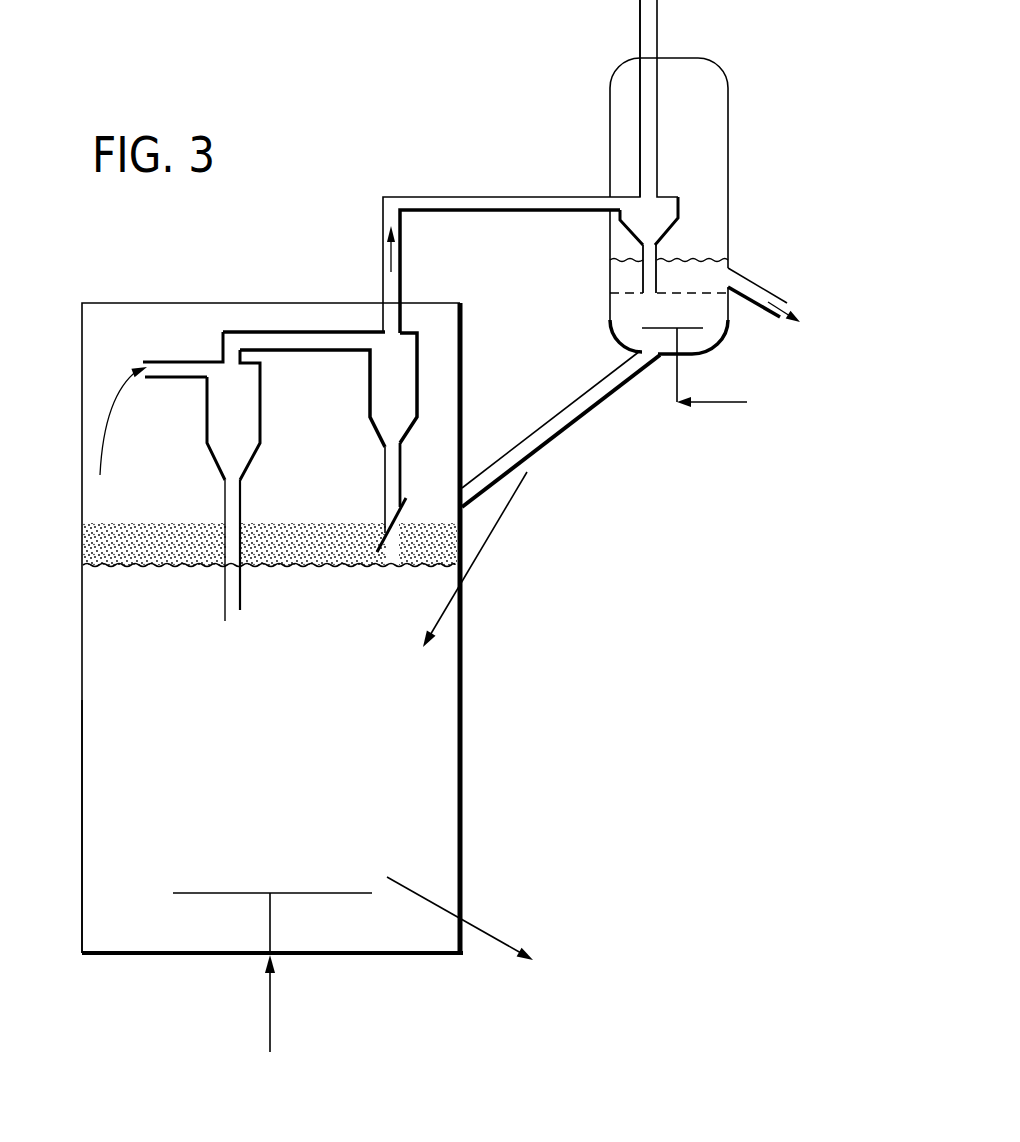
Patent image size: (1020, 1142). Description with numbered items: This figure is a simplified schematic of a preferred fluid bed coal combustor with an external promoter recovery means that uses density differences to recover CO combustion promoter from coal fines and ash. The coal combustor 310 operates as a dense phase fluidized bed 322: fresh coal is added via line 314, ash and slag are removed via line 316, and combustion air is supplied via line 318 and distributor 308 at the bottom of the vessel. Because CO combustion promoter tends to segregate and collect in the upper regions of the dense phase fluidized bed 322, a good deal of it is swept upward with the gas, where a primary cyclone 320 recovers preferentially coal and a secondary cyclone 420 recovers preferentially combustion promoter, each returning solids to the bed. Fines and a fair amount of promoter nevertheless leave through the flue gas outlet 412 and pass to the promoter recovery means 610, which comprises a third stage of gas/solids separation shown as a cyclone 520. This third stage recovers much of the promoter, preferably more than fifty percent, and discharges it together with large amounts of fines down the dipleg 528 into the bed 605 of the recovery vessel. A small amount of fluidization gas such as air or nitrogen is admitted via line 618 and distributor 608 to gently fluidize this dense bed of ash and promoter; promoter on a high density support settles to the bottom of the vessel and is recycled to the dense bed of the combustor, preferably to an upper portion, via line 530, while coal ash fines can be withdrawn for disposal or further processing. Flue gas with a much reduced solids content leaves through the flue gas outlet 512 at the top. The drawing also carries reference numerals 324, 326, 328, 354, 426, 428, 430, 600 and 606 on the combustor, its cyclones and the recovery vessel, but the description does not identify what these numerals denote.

The distributor 308 is at (313, 895).
The coal combustor 310 is at (83, 690).
The line 314 is at (497, 522).
The line 316 is at (483, 928).
The line 318 is at (272, 993).
The primary cyclone 320 is at (262, 410).
The dense phase fluidized bed 322 is at (83, 858).
The fluidized bed 324 is at (110, 565).
The inlet conduit 326 is at (198, 360).
The cyclone dipleg 328 is at (242, 523).
The bed surface 354 is at (112, 527).
The flue gas outlet 412 is at (403, 290).
The secondary cyclone 420 is at (418, 378).
The crossover conduit 426 is at (360, 330).
The downcomer leg 428 is at (400, 477).
The conduit outlet end 430 is at (377, 548).
The flue gas outlet 512 is at (657, 20).
The cyclone 520 is at (680, 212).
The dipleg 528 is at (643, 268).
The line 530 is at (590, 409).
The vessel lower portion 600 is at (622, 320).
The bed 605 is at (713, 286).
The outlet conduit 606 is at (742, 278).
The distributor 608 is at (718, 337).
The promoter recovery means 610 is at (728, 98).
The line 618 is at (712, 404).